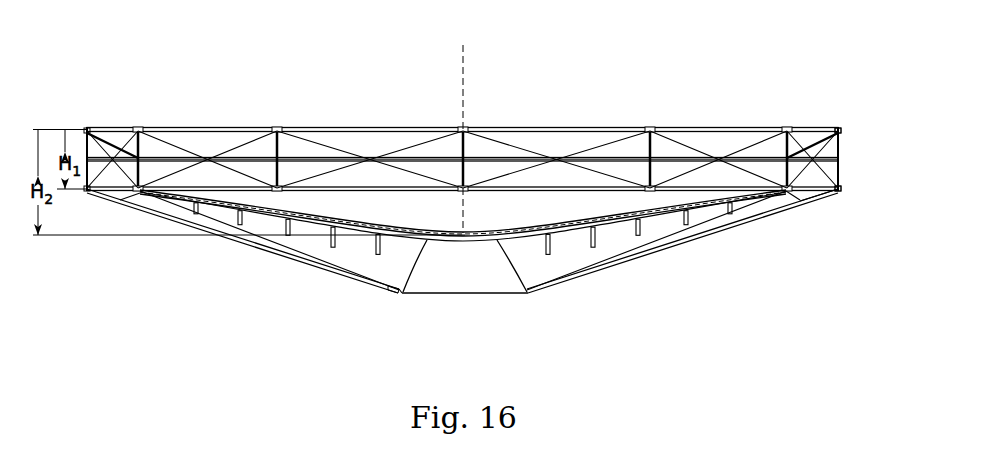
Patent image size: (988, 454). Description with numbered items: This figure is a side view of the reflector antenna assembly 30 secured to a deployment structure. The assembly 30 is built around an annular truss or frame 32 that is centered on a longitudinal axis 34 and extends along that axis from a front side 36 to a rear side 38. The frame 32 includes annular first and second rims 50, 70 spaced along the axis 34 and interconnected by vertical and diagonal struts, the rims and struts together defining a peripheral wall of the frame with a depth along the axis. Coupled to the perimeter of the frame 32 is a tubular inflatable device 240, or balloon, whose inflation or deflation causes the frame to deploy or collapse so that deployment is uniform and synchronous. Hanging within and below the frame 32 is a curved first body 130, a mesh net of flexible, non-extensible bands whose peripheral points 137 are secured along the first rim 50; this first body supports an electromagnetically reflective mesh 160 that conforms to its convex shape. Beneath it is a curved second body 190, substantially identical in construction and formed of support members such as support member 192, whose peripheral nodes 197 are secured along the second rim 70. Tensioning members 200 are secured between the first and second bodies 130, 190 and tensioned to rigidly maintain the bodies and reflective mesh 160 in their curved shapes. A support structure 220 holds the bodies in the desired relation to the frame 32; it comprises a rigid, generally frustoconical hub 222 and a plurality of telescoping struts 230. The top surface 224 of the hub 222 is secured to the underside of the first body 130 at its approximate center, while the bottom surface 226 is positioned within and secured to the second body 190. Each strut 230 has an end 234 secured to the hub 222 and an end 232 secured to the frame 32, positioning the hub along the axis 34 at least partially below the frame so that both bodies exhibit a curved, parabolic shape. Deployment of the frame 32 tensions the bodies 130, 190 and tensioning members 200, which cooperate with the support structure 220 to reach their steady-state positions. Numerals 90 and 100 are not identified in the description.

The reflector antenna assembly 30 is at (802, 82).
The frame 32 is at (852, 124).
The longitudinal axis 34 is at (465, 61).
The front side 36 is at (85, 124).
The rear side 38 is at (818, 203).
The first rim 50 is at (205, 126).
The second rim 70 is at (797, 202).
The upper end node 90 is at (842, 131).
The lower end node 100 is at (842, 188).
The first body 130 is at (579, 212).
The peripheral points 137 is at (863, 149).
The reflective mesh 160 is at (401, 238).
The second body 190 is at (298, 251).
The support member 192 is at (404, 303).
The peripheral nodes 197 is at (863, 206).
The tensioning members 200 is at (280, 217).
The support structure 220 is at (521, 304).
The hub 222 is at (488, 291).
The top surface 224 is at (464, 240).
The bottom surface 226 is at (452, 296).
The struts 230 is at (334, 269).
The strut end 232 is at (129, 194).
The strut end 234 is at (396, 292).
The tubular inflatable device 240 is at (721, 157).